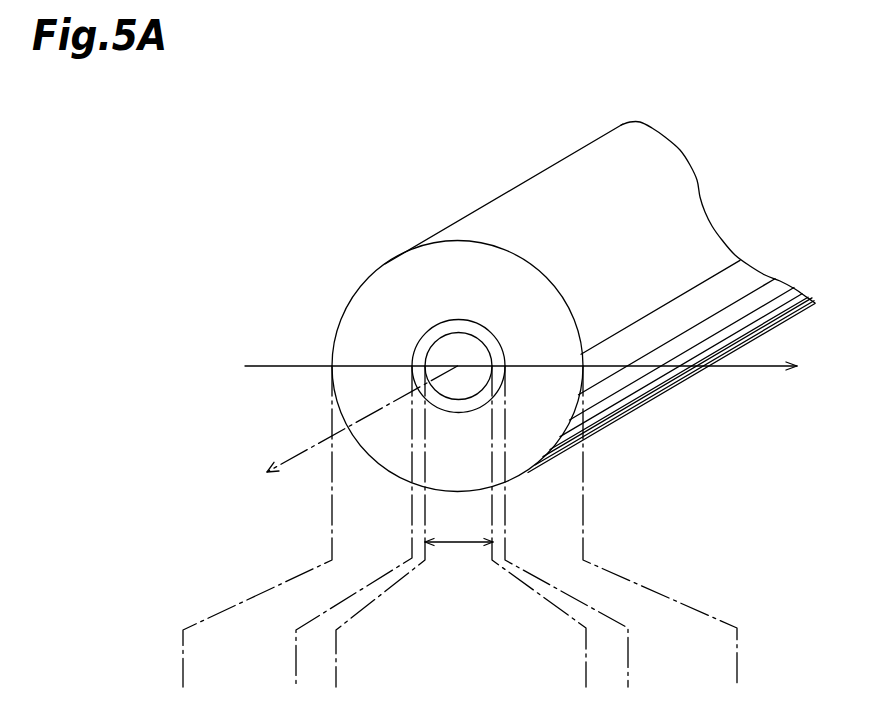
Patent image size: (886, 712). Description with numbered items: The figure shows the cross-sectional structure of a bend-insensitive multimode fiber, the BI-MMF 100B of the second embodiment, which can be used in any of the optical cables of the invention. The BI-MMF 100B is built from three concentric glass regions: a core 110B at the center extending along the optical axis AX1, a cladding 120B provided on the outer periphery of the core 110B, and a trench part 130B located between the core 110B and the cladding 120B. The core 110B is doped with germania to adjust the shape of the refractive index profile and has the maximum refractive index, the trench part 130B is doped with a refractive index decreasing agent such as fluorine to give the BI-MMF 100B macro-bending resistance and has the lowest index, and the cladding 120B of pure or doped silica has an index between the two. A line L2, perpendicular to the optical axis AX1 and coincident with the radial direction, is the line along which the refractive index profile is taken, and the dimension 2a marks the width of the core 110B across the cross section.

The BI-MMF 100B is at (513, 168).
The core 110B is at (438, 355).
The cladding 120B is at (383, 286).
The trench part 130B is at (452, 328).
The line L2 is at (537, 367).
The optical axis AX1 is at (334, 426).
The core diameter 2a is at (459, 556).